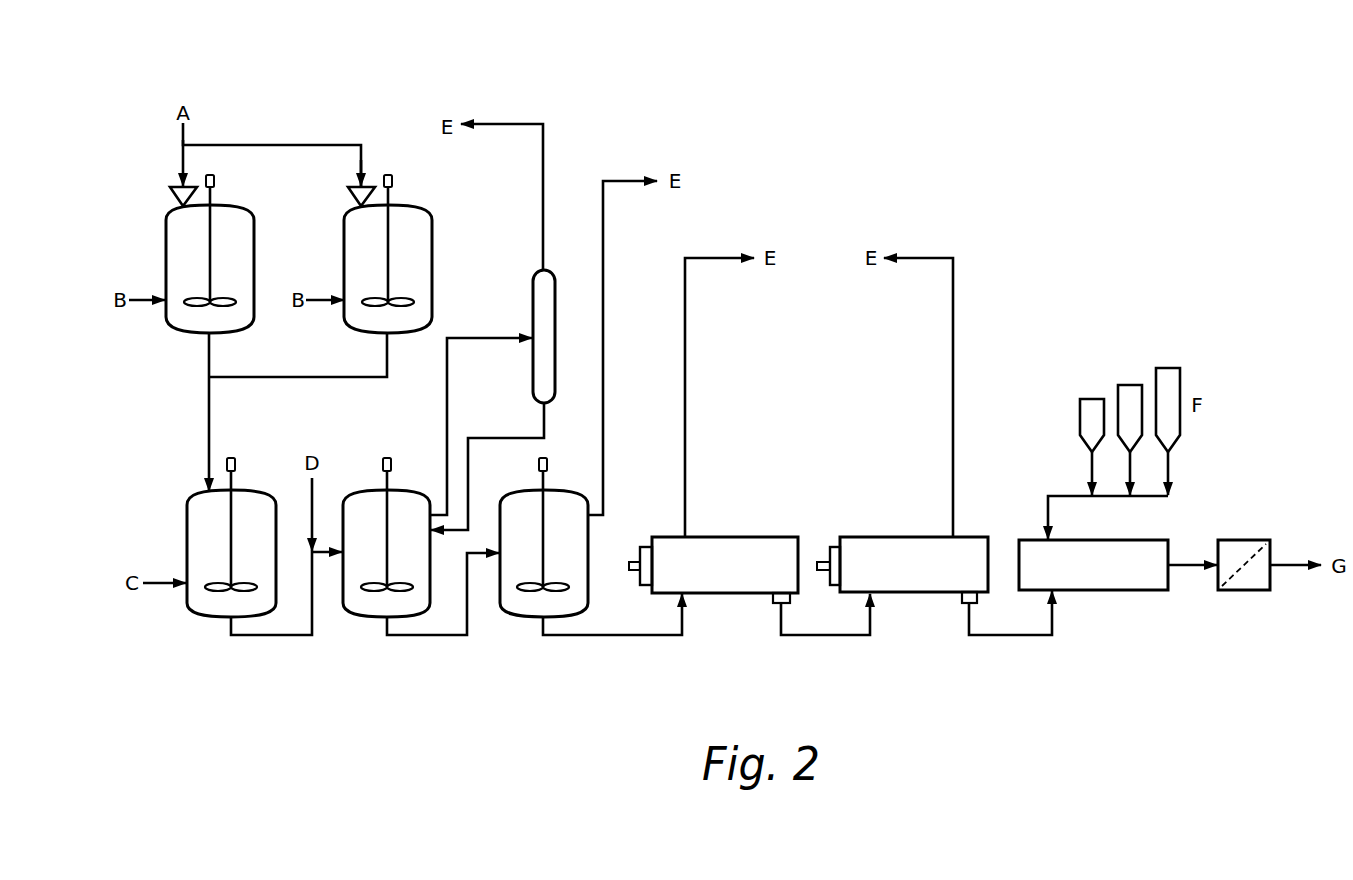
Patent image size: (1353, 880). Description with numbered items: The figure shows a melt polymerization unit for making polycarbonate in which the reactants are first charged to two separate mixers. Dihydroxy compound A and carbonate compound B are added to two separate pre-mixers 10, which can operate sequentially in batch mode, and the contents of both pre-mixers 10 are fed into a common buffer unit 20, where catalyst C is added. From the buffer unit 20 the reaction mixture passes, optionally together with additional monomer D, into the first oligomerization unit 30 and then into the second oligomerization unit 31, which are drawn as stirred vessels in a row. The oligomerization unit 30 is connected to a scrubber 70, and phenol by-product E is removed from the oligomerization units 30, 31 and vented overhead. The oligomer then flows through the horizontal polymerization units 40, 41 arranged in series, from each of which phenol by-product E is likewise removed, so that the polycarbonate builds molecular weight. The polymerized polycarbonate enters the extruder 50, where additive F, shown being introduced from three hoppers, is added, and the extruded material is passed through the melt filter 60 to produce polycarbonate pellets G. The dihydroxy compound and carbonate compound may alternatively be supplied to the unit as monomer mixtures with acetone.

The pre-mixer 10 is at (242, 200).
The buffer unit 20 is at (201, 628).
The oligomerization unit 30 is at (359, 628).
The oligomerization unit 31 is at (516, 627).
The polymerization unit 40 is at (724, 608).
The polymerization unit 41 is at (909, 608).
The extruder 50 is at (1101, 602).
The melt filter 60 is at (1253, 606).
The scrubber 70 is at (518, 307).